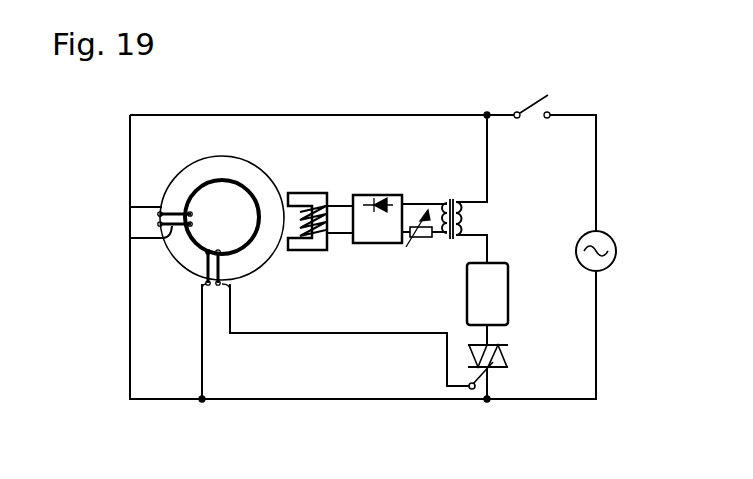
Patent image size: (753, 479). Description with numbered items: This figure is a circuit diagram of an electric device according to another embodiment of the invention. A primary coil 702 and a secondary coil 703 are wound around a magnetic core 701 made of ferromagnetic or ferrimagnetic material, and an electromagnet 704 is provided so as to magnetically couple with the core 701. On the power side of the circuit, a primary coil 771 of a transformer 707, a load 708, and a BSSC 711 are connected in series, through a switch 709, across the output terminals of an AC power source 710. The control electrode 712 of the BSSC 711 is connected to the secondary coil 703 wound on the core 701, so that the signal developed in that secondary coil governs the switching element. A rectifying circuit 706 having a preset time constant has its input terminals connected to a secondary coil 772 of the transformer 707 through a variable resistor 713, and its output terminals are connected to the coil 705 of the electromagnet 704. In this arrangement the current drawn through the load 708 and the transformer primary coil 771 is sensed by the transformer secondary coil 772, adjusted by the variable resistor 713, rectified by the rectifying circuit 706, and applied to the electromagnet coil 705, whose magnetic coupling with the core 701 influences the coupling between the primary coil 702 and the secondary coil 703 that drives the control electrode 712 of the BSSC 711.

The magnetic core 701 is at (223, 156).
The primary coil 702 is at (170, 229).
The secondary coil 703 is at (226, 270).
The electromagnet 704 is at (300, 198).
The coil of the electromagnet 705 is at (324, 240).
The rectifying circuit 706 is at (366, 196).
The transformer 707 is at (470, 197).
The load 708 is at (500, 276).
The switch 709 is at (541, 95).
The AC power source 710 is at (615, 248).
The BSSC 711 is at (508, 358).
The control electrode 712 is at (479, 392).
The variable resistor 713 is at (421, 240).
The primary coil of the transformer 771 is at (468, 222).
The secondary coil of the transformer 772 is at (440, 215).